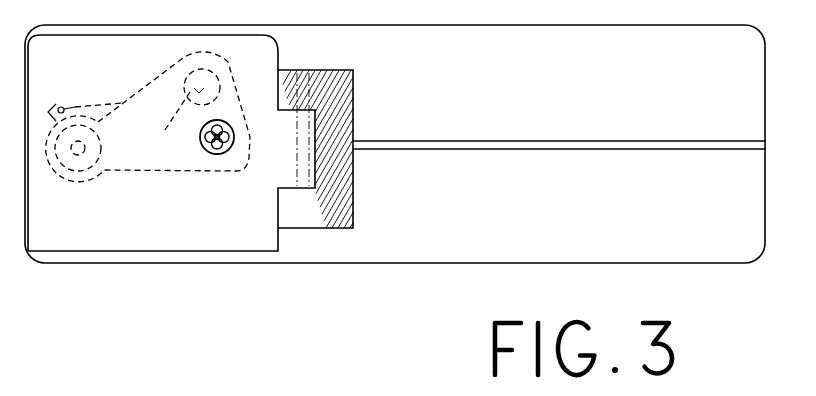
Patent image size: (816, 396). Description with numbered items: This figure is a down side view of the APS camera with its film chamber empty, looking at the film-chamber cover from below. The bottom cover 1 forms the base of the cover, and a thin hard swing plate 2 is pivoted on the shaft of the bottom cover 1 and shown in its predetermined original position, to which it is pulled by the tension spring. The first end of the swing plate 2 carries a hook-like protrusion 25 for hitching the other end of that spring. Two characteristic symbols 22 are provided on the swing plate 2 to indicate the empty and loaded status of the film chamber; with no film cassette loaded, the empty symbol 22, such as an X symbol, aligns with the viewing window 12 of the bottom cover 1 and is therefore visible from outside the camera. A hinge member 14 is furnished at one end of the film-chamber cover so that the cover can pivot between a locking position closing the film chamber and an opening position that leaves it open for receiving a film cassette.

The bottom cover 1 is at (222, 215).
The swing plate 2 is at (133, 172).
The viewing window 12 is at (235, 138).
The hinge member 14 is at (288, 218).
The characteristic symbol 22 is at (199, 137).
The hook-like protrusion 25 is at (85, 99).